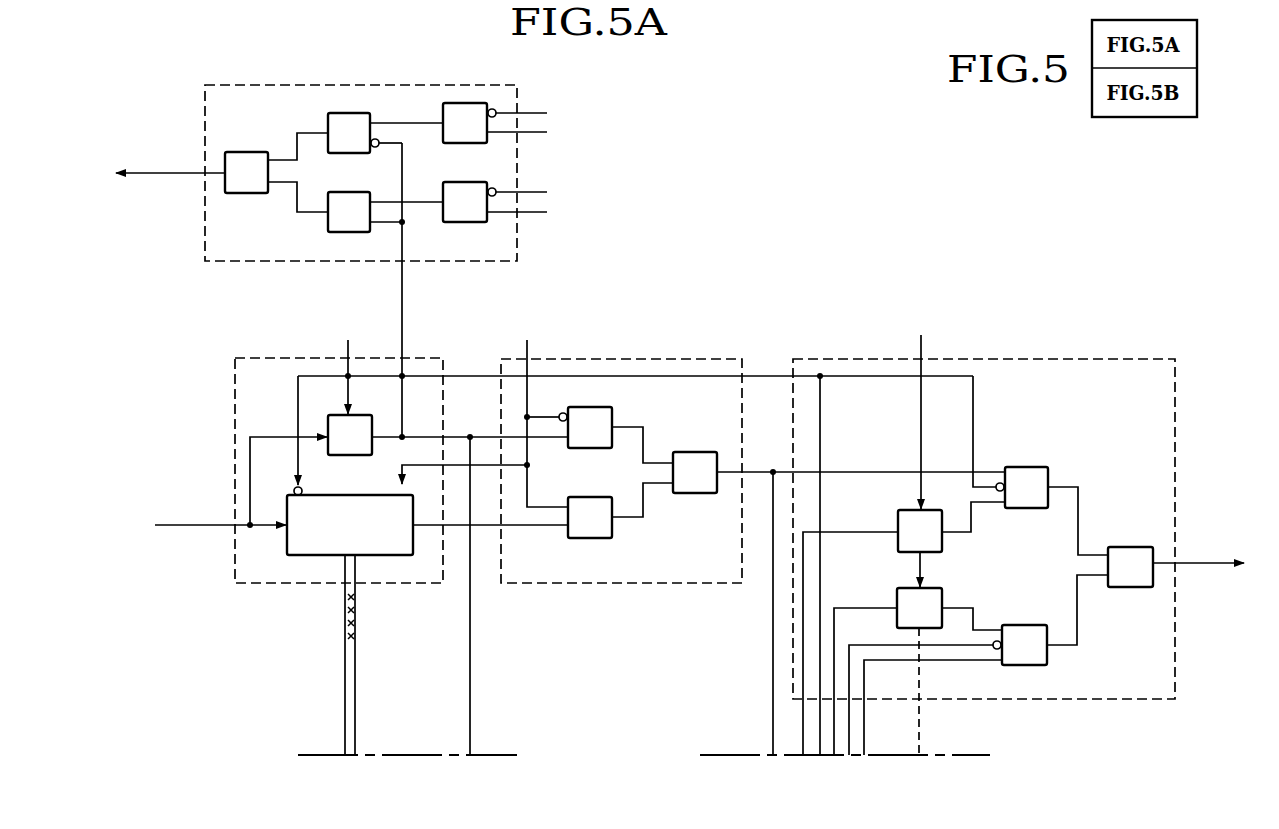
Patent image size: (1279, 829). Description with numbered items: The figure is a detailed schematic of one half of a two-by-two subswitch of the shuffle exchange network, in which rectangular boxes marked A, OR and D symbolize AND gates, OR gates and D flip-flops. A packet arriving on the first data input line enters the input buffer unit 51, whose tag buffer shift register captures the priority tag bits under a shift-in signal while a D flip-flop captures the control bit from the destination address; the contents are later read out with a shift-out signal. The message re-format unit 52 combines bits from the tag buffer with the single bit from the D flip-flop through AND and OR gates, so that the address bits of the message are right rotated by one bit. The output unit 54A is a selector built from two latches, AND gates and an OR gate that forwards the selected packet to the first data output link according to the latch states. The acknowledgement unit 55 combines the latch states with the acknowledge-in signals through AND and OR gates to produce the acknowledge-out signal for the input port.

The acknowledgement unit 55 is at (258, 265).
The input buffer unit 51 is at (287, 357).
The message re-format unit 52 is at (668, 358).
The output unit 54A is at (1092, 358).